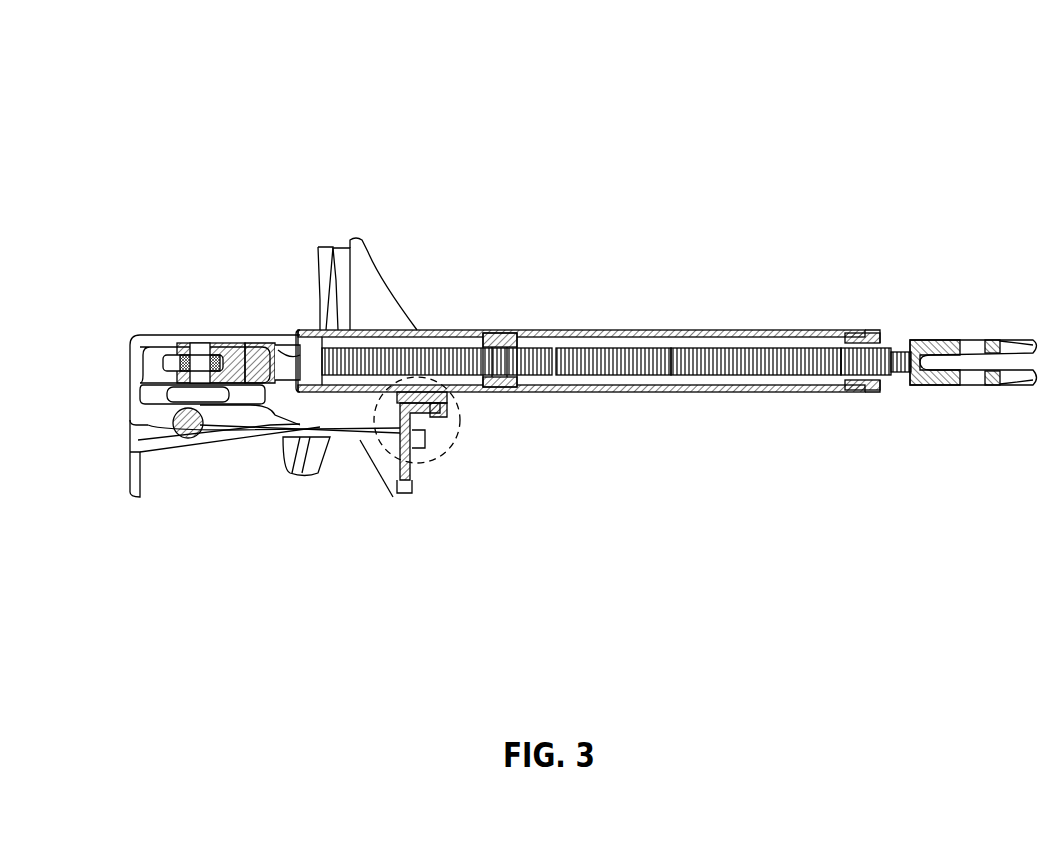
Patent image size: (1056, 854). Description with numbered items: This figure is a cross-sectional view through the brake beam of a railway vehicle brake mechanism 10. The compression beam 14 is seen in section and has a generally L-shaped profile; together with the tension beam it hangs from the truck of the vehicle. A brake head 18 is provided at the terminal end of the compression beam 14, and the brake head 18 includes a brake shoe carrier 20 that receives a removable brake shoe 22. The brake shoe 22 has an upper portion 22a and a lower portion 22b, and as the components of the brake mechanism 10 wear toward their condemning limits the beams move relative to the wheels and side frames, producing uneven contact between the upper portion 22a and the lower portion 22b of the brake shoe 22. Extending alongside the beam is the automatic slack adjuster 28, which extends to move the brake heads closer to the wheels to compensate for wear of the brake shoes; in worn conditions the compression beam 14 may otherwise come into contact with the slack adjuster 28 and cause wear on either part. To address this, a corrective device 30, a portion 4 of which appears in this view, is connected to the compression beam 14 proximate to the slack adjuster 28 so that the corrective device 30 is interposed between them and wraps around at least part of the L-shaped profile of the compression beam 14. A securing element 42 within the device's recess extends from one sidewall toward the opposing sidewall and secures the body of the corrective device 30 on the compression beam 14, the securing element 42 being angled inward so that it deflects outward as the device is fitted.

The brake mechanism 10 is at (538, 128).
The slack adjuster 28 is at (645, 332).
The brake head 18 is at (385, 290).
The brake shoe carrier 20 is at (336, 248).
The brake shoe 22 is at (318, 328).
The upper portion of the brake shoe 22a is at (318, 247).
The lower portion of the brake shoe 22b is at (283, 468).
The corrective device 30 is at (450, 400).
The compression beam 14 is at (385, 462).
The securing element 42 is at (447, 417).
The portion of the corrective device 4 is at (450, 433).